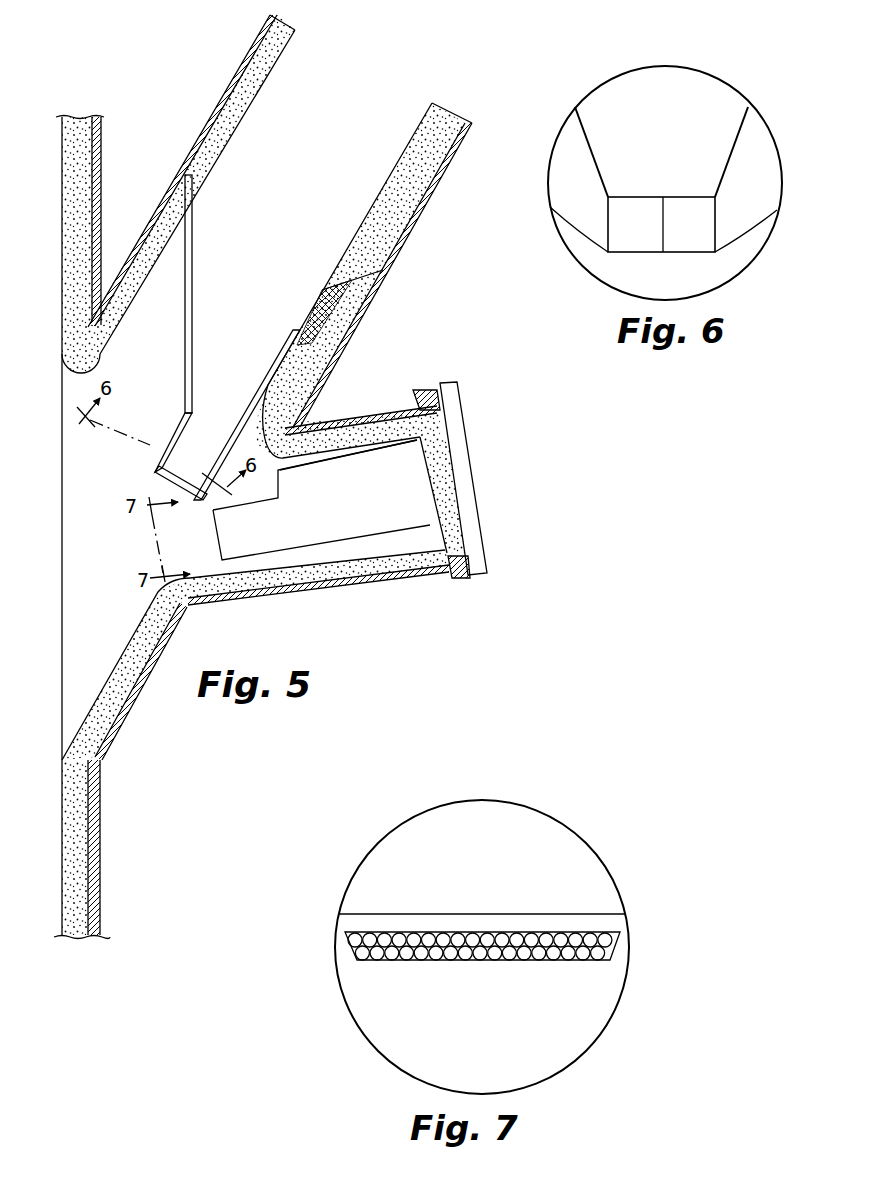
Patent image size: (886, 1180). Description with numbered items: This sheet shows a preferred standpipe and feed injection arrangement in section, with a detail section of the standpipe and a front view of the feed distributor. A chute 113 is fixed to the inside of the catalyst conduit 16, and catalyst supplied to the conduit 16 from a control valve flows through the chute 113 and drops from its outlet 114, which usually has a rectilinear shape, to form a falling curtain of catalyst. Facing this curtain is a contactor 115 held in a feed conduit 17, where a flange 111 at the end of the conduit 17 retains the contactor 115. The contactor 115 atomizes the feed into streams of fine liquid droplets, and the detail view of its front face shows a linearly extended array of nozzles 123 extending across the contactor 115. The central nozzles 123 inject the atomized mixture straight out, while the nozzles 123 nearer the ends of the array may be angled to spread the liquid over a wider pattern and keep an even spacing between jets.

In FIG. 5, the conduit 16 is at (217, 106).
In FIG. 6, the conduit 16 is at (574, 113).
In FIG. 5, the conduit 17 is at (362, 583).
In FIG. 5, the flange 111 is at (480, 580).
In FIG. 5, the chute 113 is at (183, 328).
In FIG. 6, the chute 113 is at (747, 157).
In FIG. 5, the outlet 114 is at (160, 453).
In FIG. 6, the outlet 114 is at (607, 232).
In FIG. 5, the contactor 115 is at (290, 535).
In FIG. 7, the nozzles 123 is at (606, 927).